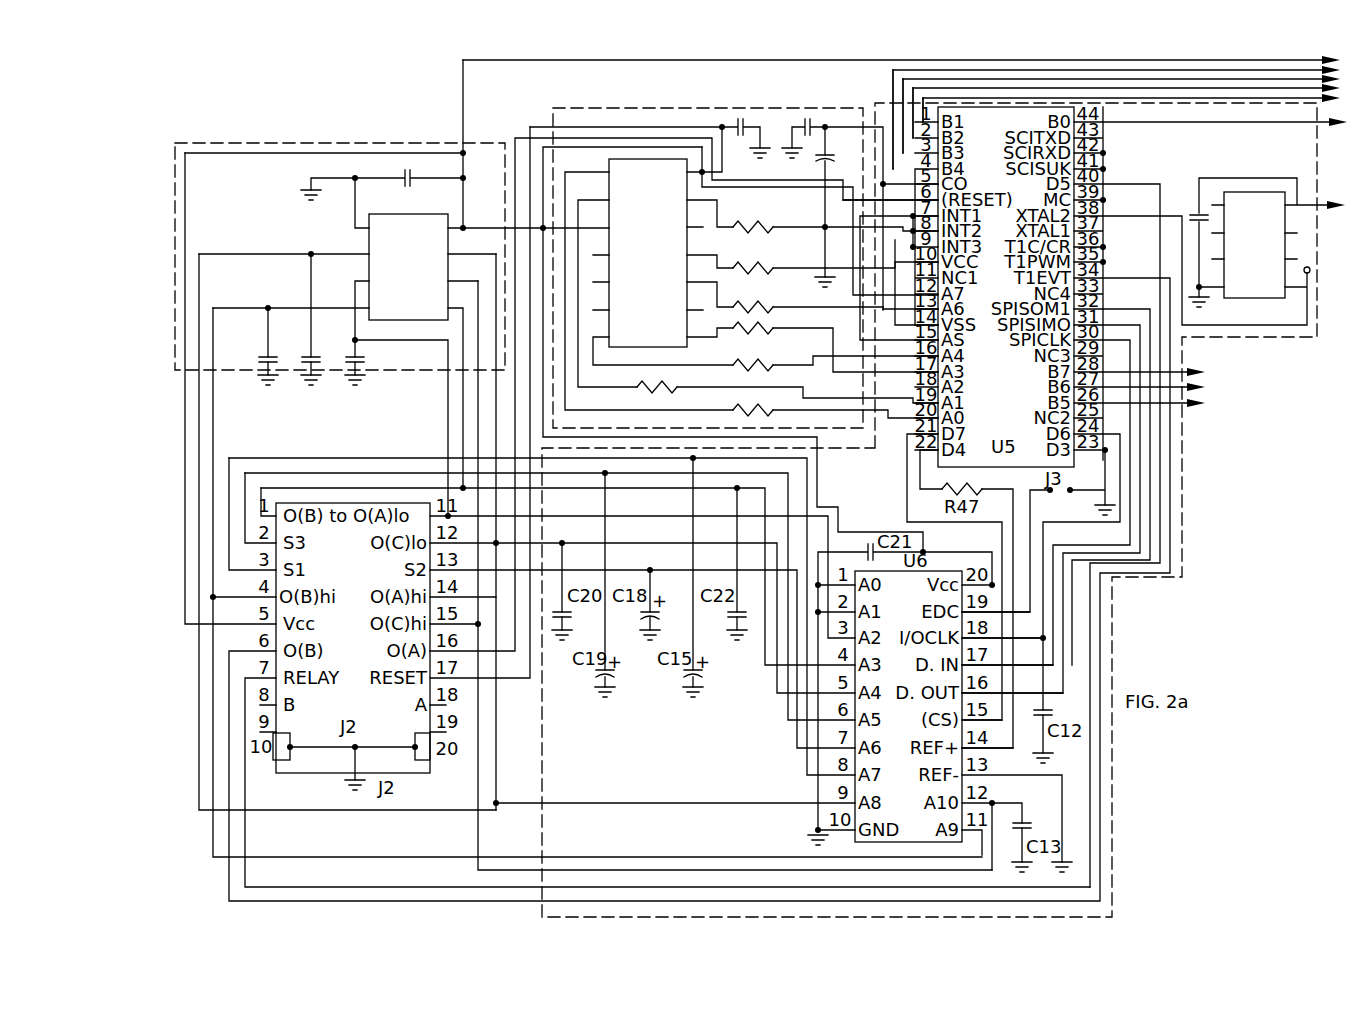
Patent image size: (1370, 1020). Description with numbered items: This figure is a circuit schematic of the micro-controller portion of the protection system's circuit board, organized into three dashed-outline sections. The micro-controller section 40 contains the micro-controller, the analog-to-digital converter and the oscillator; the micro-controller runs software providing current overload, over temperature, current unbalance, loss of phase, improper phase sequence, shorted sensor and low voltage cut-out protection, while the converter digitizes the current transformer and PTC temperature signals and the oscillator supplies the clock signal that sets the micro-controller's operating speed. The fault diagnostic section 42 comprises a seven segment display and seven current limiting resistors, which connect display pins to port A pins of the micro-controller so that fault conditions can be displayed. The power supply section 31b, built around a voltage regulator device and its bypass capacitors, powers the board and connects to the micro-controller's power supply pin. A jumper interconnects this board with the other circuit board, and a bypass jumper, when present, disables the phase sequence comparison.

The power supply section 31b is at (283, 140).
The fault diagnostic section 42 is at (625, 102).
The micro-controller section 40 is at (1255, 340).